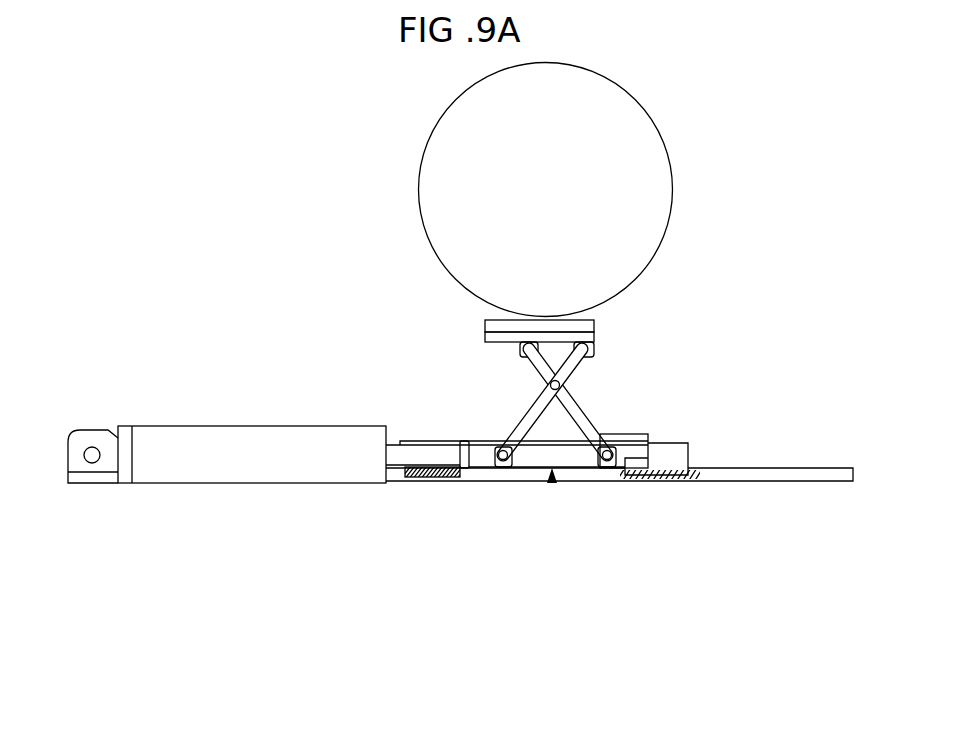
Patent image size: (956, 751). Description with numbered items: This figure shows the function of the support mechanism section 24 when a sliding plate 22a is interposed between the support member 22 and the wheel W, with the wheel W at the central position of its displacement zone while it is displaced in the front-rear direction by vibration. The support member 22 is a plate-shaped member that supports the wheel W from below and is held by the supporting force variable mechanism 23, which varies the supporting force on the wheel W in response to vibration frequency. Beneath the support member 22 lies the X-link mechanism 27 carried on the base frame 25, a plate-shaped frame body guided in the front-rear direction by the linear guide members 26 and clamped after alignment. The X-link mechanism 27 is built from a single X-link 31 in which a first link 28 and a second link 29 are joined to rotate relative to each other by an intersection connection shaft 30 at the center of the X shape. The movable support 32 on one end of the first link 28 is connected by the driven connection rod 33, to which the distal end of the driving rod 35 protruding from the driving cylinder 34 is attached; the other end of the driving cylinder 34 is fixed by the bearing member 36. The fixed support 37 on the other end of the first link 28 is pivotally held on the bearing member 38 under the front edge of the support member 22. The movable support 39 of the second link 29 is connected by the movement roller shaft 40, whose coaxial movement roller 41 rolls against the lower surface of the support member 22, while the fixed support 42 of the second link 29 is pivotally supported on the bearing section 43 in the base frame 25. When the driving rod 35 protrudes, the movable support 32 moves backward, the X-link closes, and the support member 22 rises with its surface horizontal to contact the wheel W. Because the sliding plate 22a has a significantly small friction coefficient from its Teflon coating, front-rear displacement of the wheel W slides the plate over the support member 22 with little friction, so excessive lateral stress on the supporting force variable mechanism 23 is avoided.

The wheel W is at (648, 113).
The supporting force variable mechanism 23 is at (360, 262).
The support mechanism section 24 is at (380, 321).
The support member 22 is at (614, 326).
The sliding plate 22a is at (597, 322).
The movement roller shaft 40 is at (520, 345).
The bearing member 38 is at (597, 347).
The movable support 39 is at (538, 361).
The fixed support 37 is at (593, 358).
The intersection connection shaft 30 is at (592, 402).
The movement roller 41 is at (548, 384).
The single X-link 31 is at (551, 402).
The movable support 32 is at (490, 467).
The driven connection rod 33 is at (505, 468).
The second link 29 is at (590, 460).
The fixed support 42 is at (612, 463).
The bearing section 43 is at (634, 473).
The driving rod 35 is at (410, 441).
The first link 28 is at (525, 463).
The base frame 25 is at (688, 443).
The linear guide member 26 is at (619, 462).
The X-link mechanism 27 is at (552, 483).
The driving cylinder 34 is at (255, 440).
The bearing member 36 is at (88, 445).